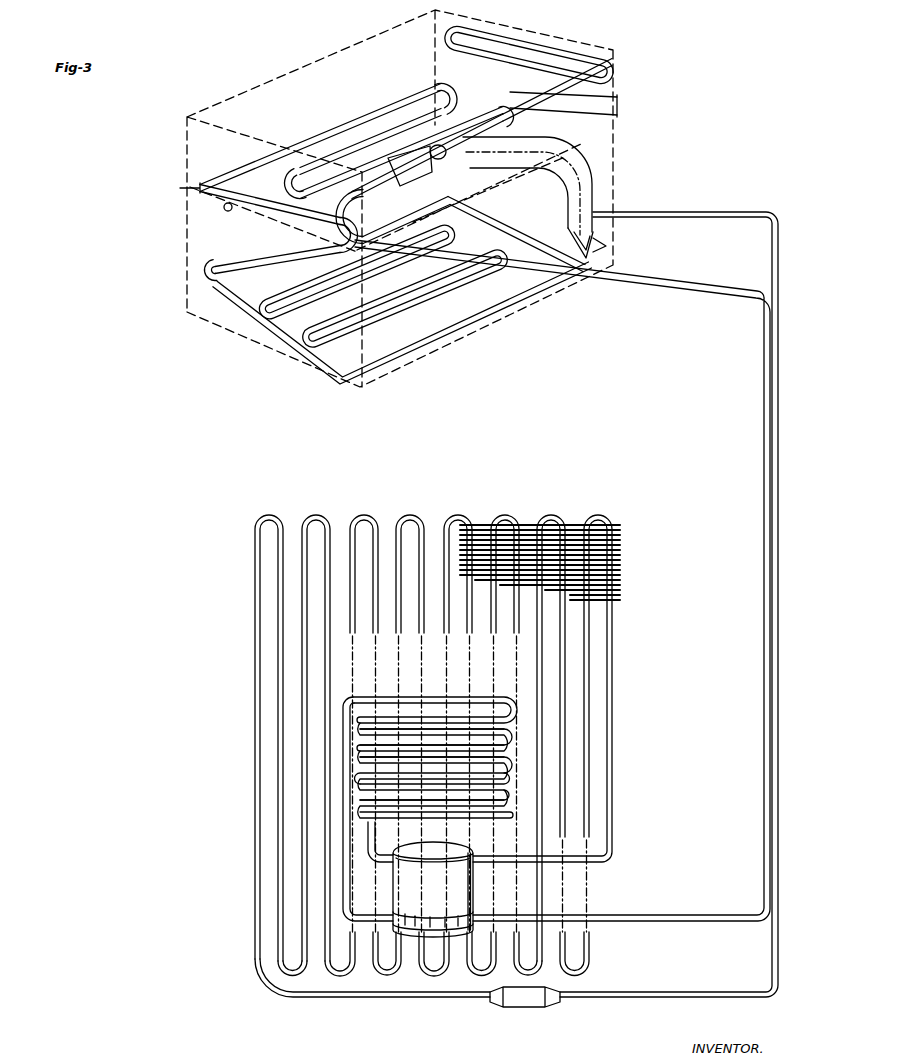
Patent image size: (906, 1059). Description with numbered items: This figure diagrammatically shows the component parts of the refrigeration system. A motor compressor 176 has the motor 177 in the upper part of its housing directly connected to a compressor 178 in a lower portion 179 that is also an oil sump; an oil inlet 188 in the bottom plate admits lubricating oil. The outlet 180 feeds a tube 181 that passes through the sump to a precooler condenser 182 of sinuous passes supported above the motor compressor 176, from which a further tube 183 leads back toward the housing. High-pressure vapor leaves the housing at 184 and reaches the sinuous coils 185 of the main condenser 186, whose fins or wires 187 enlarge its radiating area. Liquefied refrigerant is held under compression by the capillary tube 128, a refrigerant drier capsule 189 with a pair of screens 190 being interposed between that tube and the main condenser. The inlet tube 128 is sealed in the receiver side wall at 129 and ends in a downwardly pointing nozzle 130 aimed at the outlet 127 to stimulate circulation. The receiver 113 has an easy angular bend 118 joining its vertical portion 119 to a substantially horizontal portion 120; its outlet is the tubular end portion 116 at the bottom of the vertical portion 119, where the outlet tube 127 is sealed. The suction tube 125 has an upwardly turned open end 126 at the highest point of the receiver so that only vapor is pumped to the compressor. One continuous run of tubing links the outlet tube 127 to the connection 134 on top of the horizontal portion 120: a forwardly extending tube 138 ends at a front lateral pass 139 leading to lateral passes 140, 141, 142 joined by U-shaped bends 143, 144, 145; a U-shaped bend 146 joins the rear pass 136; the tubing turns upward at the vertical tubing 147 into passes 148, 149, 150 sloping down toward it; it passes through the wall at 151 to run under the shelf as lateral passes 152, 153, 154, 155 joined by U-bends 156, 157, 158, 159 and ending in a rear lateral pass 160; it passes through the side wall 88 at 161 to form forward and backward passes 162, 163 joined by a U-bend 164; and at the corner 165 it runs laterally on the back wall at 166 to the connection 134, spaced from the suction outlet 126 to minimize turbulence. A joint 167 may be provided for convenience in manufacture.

The side wall 88 is at (616, 82).
The receiver 113 is at (594, 175).
The tubular end portion 116 is at (607, 246).
The easy angular bend 118 is at (568, 150).
The vertical portion 119 is at (594, 192).
The horizontal portion 120 is at (483, 178).
The suction tube 125 is at (668, 284).
The upwardly turned open end 126 is at (383, 158).
The outlet tube 127 is at (596, 262).
The inlet tube 128 is at (720, 210).
The inlet tube seal 129 is at (600, 212).
The nozzle 130 is at (575, 225).
The tubing connection 134 is at (442, 157).
The rear pass 136 is at (487, 312).
The forwardly extending tube 138 is at (500, 210).
The front lateral pass 139 is at (400, 239).
The lateral pass 140 is at (367, 281).
The lateral pass 141 is at (380, 297).
The lateral pass 142 is at (402, 309).
The U-shaped bend 143 is at (356, 272).
The U-shaped bend 144 is at (405, 298).
The U-shaped bend 145 is at (444, 240).
The U-shaped bend 146 is at (510, 250).
The vertical tubing 147 is at (338, 387).
The pass 148 is at (257, 345).
The pass 149 is at (258, 262).
The pass 150 is at (260, 232).
The side wall passage 151 is at (196, 188).
The lateral pass 152 is at (336, 118).
The lateral pass 153 is at (393, 130).
The lateral pass 154 is at (423, 143).
The lateral pass 155 is at (509, 118).
The U-bend 156 is at (425, 85).
The U-bend 157 is at (304, 186).
The U-bend 158 is at (505, 104).
The U-bend 159 is at (343, 208).
The rear lateral pass 160 is at (616, 116).
The side wall passage 161 is at (616, 98).
The forward and backward pass 162 is at (533, 60).
The forward and backward pass 163 is at (563, 47).
The U-bend 164 is at (443, 40).
The corner portion 165 is at (616, 66).
The back wall lateral tubing 166 is at (537, 103).
The joint 167 is at (225, 213).
The motor compressor 176 is at (463, 910).
The motor 177 is at (455, 860).
The compressor 178 is at (416, 935).
The lower portion 179 is at (456, 937).
The compressor outlet 180 is at (422, 895).
The tube 181 is at (383, 926).
The precooler condenser 182 is at (413, 697).
The discharge line 183 is at (374, 838).
The vapor outlet 184 is at (488, 862).
The sinuous coils 185 is at (612, 618).
The main condenser 186 is at (573, 654).
The fins or wires 187 is at (616, 545).
The oil inlet 188 is at (422, 935).
The refrigerant drier capsule 189 is at (538, 1007).
The screens 190 is at (500, 1008).